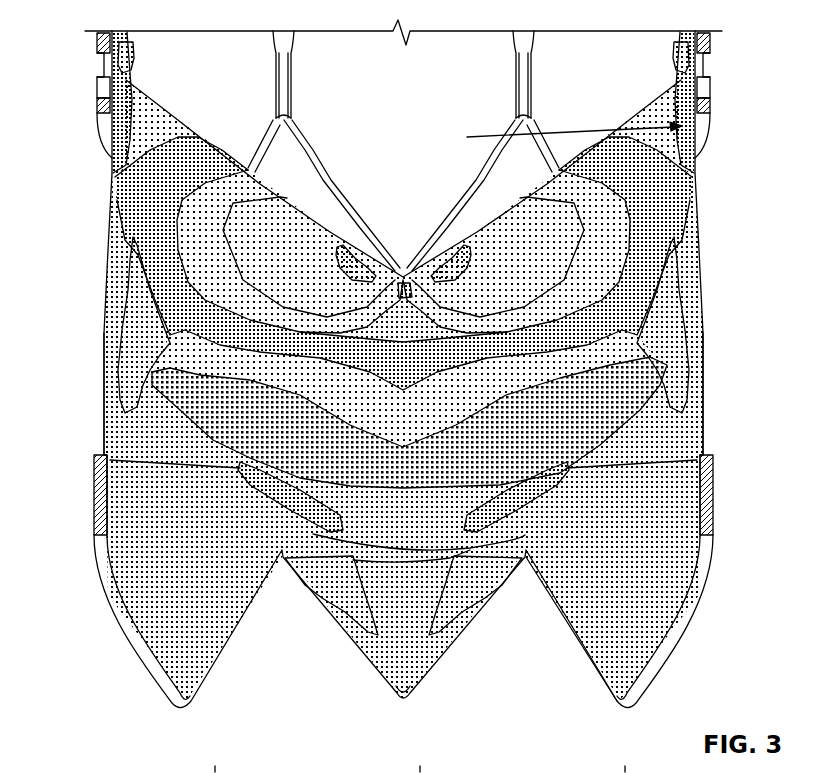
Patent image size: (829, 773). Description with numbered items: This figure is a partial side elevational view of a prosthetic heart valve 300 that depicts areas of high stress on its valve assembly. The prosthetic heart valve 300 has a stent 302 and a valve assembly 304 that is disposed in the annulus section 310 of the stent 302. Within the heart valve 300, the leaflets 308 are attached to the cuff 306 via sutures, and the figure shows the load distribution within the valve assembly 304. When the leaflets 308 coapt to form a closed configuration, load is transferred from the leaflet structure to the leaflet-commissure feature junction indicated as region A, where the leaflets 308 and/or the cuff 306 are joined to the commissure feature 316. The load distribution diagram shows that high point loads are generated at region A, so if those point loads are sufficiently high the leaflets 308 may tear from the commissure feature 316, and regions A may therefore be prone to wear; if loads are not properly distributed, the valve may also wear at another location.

The prosthetic heart valve 300 is at (722, 57).
The stent 302 is at (706, 432).
The valve assembly 304 is at (88, 351).
The cuff 306 is at (675, 575).
The leaflets 308 is at (450, 265).
The annulus section 310 is at (737, 348).
The commissure feature 316 is at (101, 70).
The leaflet-commissure feature junction region A is at (113, 127).